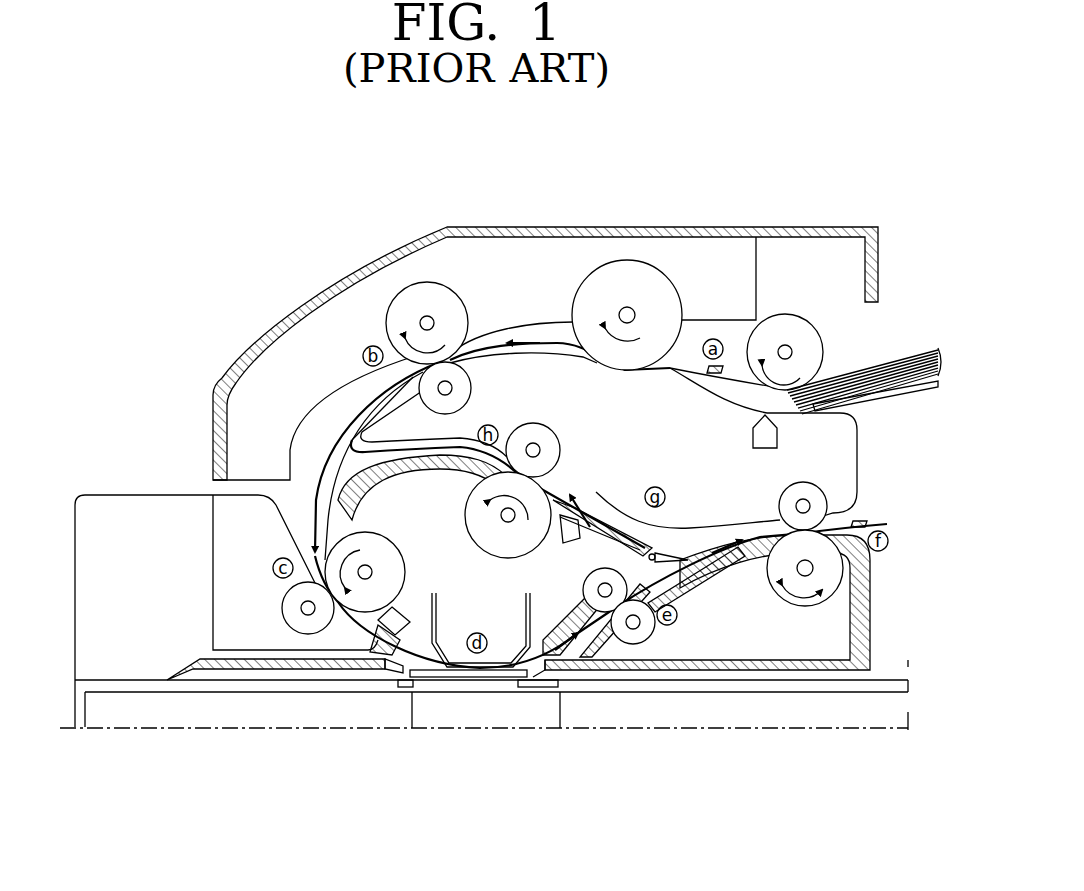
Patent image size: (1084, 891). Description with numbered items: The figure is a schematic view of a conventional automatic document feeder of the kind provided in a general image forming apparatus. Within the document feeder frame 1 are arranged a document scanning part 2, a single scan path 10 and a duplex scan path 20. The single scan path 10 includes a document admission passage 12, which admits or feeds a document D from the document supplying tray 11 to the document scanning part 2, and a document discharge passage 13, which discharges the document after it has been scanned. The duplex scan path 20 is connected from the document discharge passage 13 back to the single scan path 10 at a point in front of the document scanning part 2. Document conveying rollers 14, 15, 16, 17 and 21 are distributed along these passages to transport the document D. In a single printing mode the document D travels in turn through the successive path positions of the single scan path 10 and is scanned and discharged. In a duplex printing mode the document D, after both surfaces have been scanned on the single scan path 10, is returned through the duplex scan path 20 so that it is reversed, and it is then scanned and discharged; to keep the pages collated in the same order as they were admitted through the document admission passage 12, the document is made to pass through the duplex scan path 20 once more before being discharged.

The document feeder frame 1 is at (488, 226).
The document scanning part 2 is at (466, 712).
The single scan path 10 is at (770, 157).
The document supplying tray 11 is at (898, 410).
The document admission passage 12 is at (549, 332).
The document discharge passage 13 is at (777, 530).
The document conveying roller 14 is at (405, 298).
The document conveying roller 15 is at (300, 630).
The document conveying roller 16 is at (633, 643).
The document conveying roller 17 is at (804, 606).
The duplex scan path 20 is at (598, 492).
The document conveying roller 21 is at (548, 440).
The document D is at (906, 370).